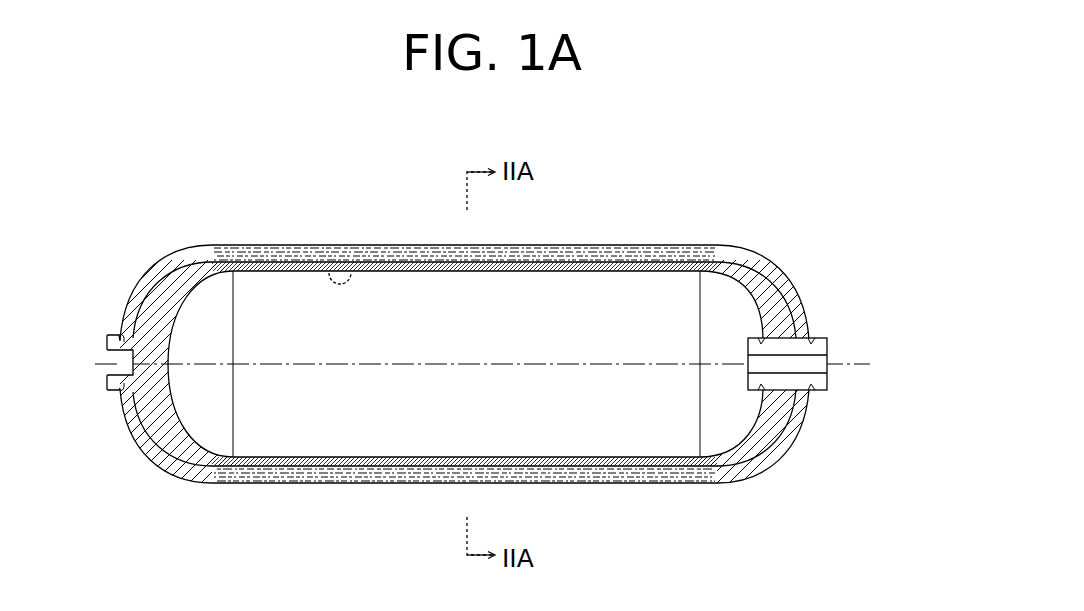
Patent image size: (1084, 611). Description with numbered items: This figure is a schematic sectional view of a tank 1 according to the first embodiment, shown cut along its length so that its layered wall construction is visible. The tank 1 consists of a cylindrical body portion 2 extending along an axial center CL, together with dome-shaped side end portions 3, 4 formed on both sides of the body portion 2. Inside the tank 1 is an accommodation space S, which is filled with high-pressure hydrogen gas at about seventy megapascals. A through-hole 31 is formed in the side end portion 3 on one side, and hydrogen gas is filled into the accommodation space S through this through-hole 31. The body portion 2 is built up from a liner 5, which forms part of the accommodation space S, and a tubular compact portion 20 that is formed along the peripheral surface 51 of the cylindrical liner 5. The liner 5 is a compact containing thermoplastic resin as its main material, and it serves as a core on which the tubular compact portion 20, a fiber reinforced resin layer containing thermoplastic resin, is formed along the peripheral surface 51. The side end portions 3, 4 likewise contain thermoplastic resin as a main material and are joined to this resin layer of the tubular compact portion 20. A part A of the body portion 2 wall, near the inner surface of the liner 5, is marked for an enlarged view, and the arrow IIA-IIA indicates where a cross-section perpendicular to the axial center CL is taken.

The tank 1 is at (482, 340).
The body portion 2 is at (566, 247).
The tubular compact portion 20 is at (637, 247).
The side end portion 3 is at (796, 371).
The through-hole 31 is at (825, 365).
The side end portion 4 is at (151, 423).
The liner 5 is at (415, 457).
The peripheral surface 51 is at (354, 480).
The part A is at (340, 296).
The accommodation space S is at (627, 425).
The axial center CL is at (502, 365).